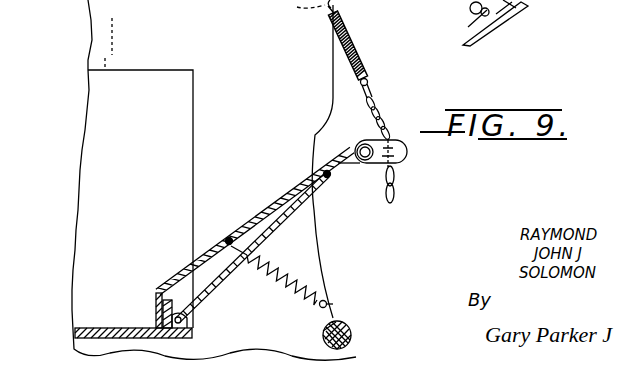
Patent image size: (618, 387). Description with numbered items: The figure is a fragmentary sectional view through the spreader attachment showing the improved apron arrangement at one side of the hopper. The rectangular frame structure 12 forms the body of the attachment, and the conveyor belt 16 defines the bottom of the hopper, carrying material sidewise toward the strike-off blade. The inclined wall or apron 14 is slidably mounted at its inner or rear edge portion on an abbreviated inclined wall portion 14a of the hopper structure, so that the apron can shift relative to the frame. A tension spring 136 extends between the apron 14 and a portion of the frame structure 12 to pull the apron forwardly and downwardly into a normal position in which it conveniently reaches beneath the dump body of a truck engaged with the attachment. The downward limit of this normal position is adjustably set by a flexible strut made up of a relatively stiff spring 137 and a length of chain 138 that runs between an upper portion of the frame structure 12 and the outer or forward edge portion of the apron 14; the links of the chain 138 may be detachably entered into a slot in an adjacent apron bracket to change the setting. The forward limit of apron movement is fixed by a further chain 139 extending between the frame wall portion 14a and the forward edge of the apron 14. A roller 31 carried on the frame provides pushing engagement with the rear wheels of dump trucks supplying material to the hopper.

The frame structure 12 is at (86, 41).
The apron 14 is at (267, 211).
The inclined wall portion 14a is at (163, 284).
The conveyor belt 16 is at (107, 327).
The roller 31 is at (322, 335).
The tension spring 136 is at (297, 280).
The spring 137 is at (353, 42).
The chain 138 is at (386, 114).
The chain 139 is at (218, 283).